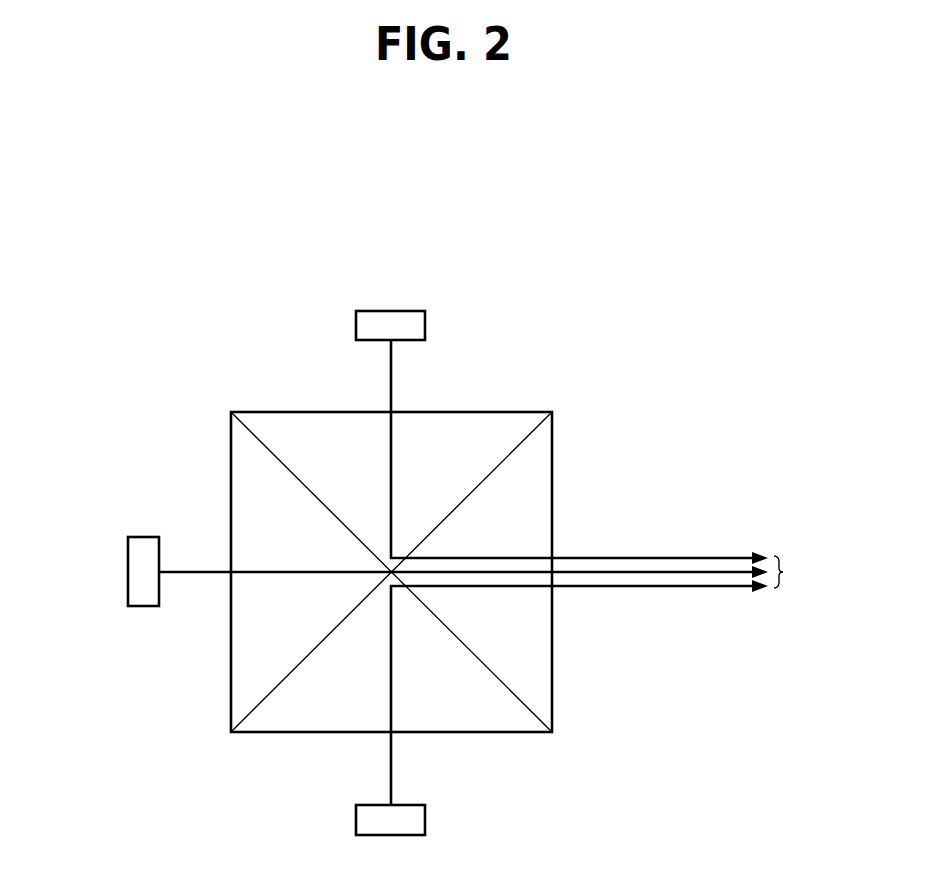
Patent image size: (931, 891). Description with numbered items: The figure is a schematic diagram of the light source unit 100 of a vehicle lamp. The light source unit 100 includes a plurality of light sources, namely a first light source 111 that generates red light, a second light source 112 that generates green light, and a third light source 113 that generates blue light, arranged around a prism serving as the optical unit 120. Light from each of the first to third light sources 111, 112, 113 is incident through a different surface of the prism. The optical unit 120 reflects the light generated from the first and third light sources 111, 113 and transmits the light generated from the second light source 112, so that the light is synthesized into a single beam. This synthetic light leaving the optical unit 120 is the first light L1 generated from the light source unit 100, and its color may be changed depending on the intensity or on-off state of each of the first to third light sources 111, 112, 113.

The light source unit 100 is at (657, 225).
The first light source 111 is at (391, 311).
The second light source 112 is at (128, 572).
The third light source 113 is at (391, 835).
The optical unit 120 is at (513, 412).
The first light L1 is at (794, 572).